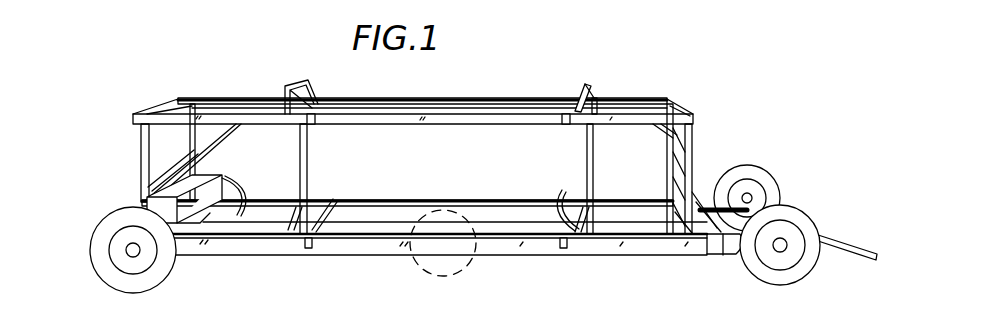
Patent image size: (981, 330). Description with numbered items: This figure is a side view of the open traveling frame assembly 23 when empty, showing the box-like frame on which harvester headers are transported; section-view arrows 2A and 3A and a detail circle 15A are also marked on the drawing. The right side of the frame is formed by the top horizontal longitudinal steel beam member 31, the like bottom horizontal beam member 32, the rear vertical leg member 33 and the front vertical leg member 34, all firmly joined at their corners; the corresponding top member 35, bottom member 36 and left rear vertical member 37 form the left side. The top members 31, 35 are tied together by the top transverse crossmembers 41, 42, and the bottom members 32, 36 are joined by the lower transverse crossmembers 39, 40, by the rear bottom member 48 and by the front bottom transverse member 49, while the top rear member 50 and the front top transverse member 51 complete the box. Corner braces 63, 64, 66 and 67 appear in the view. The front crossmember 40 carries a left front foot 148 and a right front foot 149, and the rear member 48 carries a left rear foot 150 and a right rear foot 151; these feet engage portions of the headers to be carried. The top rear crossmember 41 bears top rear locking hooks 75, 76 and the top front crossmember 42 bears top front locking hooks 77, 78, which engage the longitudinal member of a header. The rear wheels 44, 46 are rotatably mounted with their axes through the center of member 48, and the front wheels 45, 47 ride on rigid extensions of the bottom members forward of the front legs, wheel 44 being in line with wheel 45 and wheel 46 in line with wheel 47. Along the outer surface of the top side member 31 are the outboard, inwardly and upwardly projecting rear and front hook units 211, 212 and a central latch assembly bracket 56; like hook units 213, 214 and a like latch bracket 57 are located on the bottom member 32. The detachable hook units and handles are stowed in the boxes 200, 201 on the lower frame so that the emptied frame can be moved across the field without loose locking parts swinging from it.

The detail circle of wheel lock 15A is at (458, 277).
The traveling frame assembly 23 is at (218, 96).
The view direction arrow 2A is at (778, 159).
The view direction arrow 3A is at (78, 193).
The top horizontal longitudinal right steel beam member 31 is at (508, 123).
The bottom horizontal steel beam member 32 is at (525, 257).
The rear vertical steel rigid leg member 33 is at (143, 187).
The front vertical steel leg member 34 is at (692, 152).
The top horizontal member 35 is at (443, 100).
The bottom horizontal member 36 is at (510, 213).
The left rear vertical member 37 is at (212, 157).
The bottom rear transverse crossmember 39 is at (328, 203).
The bottom front transverse crossmember 40 is at (570, 207).
The top rear transverse crossmember 41 is at (287, 84).
The top front transverse crossmember 42 is at (593, 85).
The rear wheel 44 is at (157, 278).
The front wheel 45 is at (776, 287).
The rear wheel 46 is at (238, 197).
The front wheel 47 is at (743, 180).
The rear bottom member 48 is at (192, 226).
The front bottom transverse member 49 is at (670, 228).
The top rear member 50 is at (167, 110).
The front top transverse member 51 is at (682, 105).
The central latch assembly bracket 56 is at (418, 125).
The central latch assembly bracket 57 is at (418, 270).
The left brace 63 is at (147, 165).
The right corner brace 64 is at (665, 135).
The upper rail end 66 is at (648, 103).
The diagonal brace 67 is at (227, 132).
The top rear right locking hook 75 is at (277, 98).
The top rear left locking hook 76 is at (307, 90).
The top front left locking hook 77 is at (598, 103).
The top front right locking hook 78 is at (578, 100).
The left front foot 148 is at (597, 204).
The right front foot 149 is at (609, 232).
The left rear foot 150 is at (300, 203).
The right rear foot 151 is at (270, 232).
The box 200 is at (112, 208).
The box 201 is at (233, 171).
The rear hook unit 211 is at (311, 125).
The front hook unit 212 is at (565, 124).
The hook unit 213 is at (308, 250).
The hook unit 214 is at (562, 250).